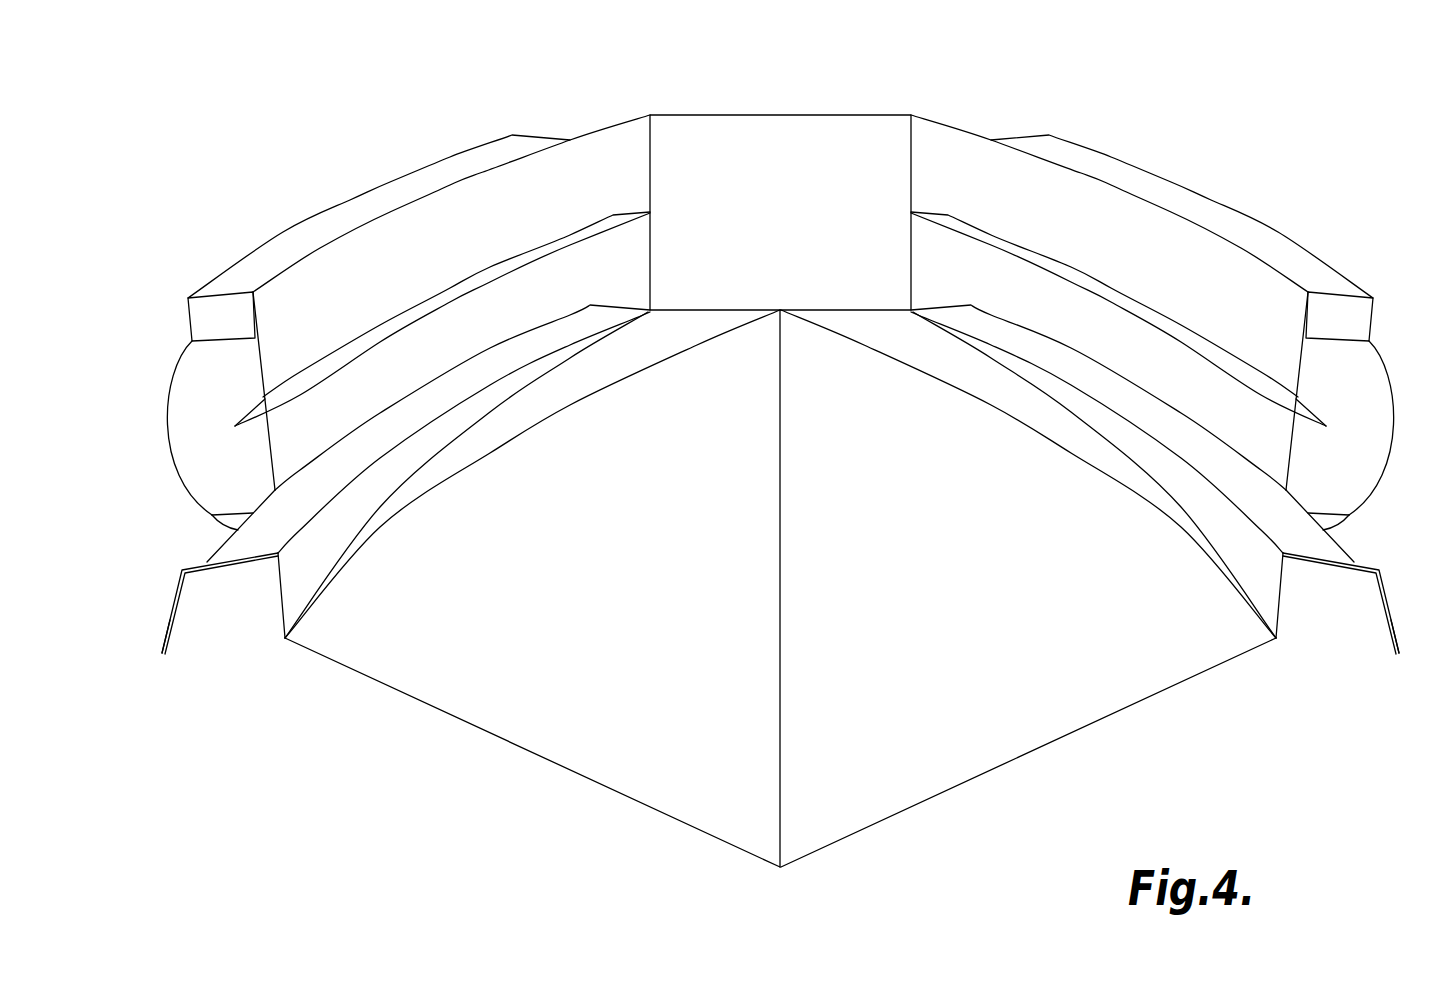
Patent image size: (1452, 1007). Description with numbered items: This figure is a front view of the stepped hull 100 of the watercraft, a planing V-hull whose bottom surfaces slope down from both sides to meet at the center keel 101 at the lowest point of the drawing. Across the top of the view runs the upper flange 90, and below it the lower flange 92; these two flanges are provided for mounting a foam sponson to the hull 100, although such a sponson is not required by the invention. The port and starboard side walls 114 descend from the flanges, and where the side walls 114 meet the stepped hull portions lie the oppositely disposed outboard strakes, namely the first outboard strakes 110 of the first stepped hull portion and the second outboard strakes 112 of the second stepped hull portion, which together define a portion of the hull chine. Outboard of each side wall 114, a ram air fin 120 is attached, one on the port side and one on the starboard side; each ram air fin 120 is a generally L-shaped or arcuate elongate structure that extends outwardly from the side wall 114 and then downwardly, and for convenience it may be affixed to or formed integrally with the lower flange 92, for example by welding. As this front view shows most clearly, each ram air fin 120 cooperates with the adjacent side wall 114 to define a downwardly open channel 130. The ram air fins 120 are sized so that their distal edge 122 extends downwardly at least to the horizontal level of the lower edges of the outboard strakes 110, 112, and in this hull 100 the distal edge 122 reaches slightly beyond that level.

The upper flange 90 is at (456, 163).
The lower flange 92 is at (250, 533).
The stepped hull 100 is at (992, 100).
The center keel 101 is at (780, 792).
The first outboard strakes 110 is at (282, 642).
The second outboard strakes 112 is at (280, 607).
The side walls 114 is at (295, 566).
The ram air fins 120 is at (172, 603).
The distal edge 122 is at (156, 653).
The downwardly open channel 130 is at (187, 625).